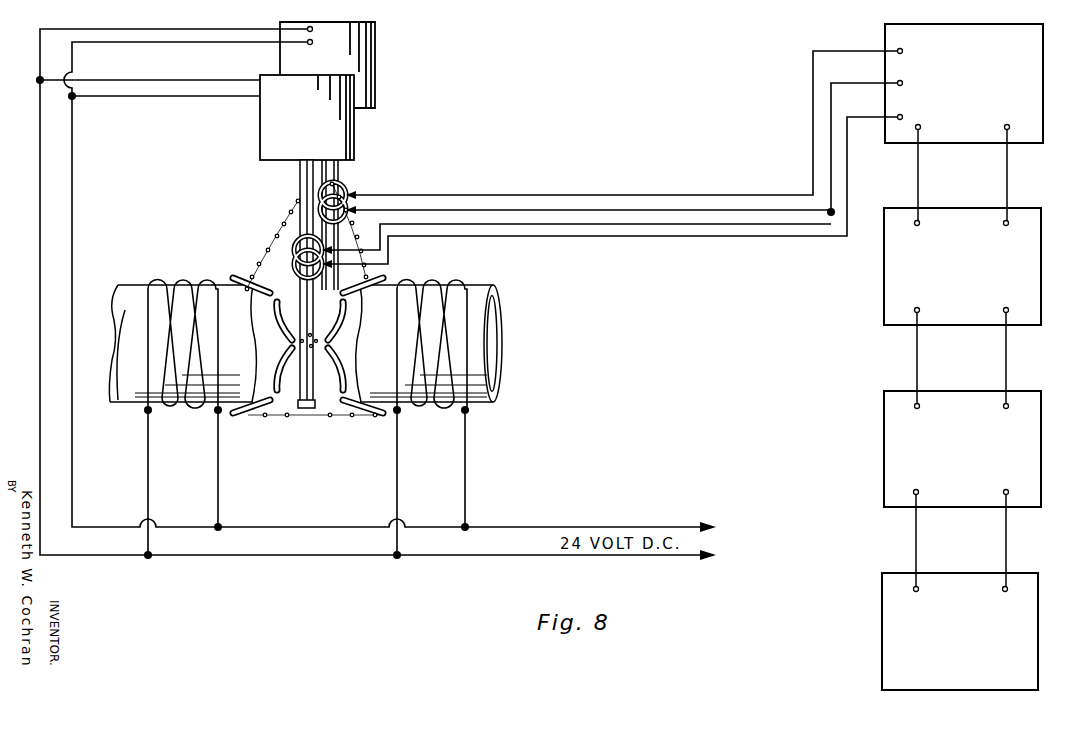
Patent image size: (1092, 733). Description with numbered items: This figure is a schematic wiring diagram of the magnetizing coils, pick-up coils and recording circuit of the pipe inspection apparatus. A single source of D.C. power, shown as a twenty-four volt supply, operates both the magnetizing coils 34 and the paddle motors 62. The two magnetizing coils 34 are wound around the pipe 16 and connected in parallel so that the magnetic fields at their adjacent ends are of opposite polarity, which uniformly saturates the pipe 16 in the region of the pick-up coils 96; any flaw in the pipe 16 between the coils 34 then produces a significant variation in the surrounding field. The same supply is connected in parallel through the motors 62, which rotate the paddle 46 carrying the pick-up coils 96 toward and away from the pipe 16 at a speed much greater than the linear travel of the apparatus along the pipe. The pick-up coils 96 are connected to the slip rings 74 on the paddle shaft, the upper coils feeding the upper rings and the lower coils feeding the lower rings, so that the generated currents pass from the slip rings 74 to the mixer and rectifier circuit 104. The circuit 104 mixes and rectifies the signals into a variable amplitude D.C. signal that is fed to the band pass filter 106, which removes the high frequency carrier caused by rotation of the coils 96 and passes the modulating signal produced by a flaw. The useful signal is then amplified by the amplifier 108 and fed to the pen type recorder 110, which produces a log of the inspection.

The pipe 16 is at (498, 333).
The magnetizing coils 34 is at (158, 277).
The paddle 46 is at (306, 410).
The paddle motor 62 is at (360, 60).
The slip rings 74 is at (347, 192).
The pick-up coils 96 is at (291, 368).
The mixer and rectifier circuit 104 is at (972, 8).
The filter 106 is at (1033, 243).
The amplifier 108 is at (1028, 430).
The pen type recorder 110 is at (1028, 603).